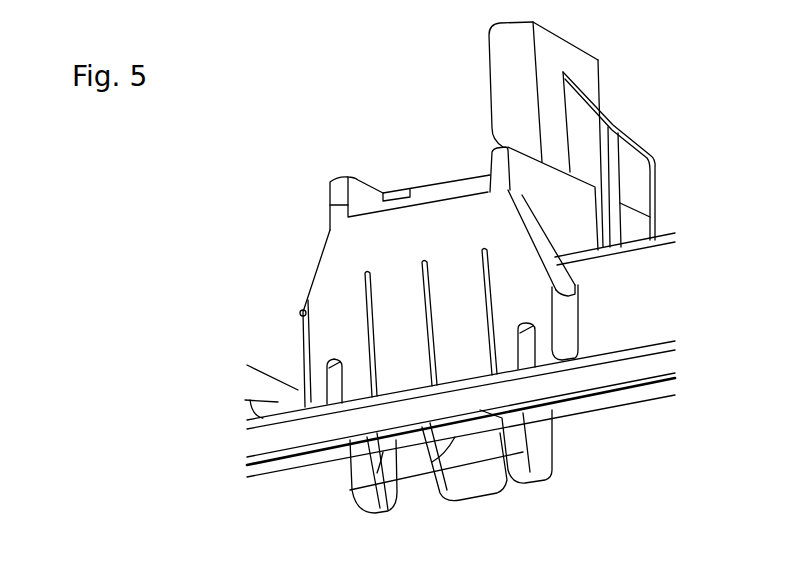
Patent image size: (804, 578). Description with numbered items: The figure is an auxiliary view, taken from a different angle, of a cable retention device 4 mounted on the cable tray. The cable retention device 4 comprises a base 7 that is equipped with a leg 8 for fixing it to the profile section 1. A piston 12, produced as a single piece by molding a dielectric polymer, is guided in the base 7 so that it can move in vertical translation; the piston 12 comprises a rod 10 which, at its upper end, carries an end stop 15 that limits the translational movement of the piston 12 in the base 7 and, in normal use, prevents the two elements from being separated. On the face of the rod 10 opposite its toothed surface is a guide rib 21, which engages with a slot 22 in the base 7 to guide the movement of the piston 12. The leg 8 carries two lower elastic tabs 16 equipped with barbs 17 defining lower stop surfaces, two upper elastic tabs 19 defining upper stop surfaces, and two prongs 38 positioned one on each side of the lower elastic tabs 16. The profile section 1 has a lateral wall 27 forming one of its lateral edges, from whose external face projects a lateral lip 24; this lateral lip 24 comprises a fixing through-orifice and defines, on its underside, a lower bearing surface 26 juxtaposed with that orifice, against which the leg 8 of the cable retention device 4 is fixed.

The profile section 1 is at (680, 213).
The cable retention device 4 is at (598, 277).
The base 7 is at (450, 180).
The leg 8 is at (380, 252).
The rod 10 is at (595, 88).
The piston 12 is at (488, 74).
The end stop 15 is at (517, 115).
The lower elastic tabs 16 is at (455, 480).
The barbs 17 is at (400, 494).
The upper elastic tabs 19 is at (303, 382).
The guide rib 21 is at (608, 133).
The slot 22 is at (593, 233).
The lateral lip 24 is at (595, 375).
The lower bearing surface 26 is at (573, 410).
The lateral wall 27 is at (640, 280).
The prongs 38 is at (380, 513).